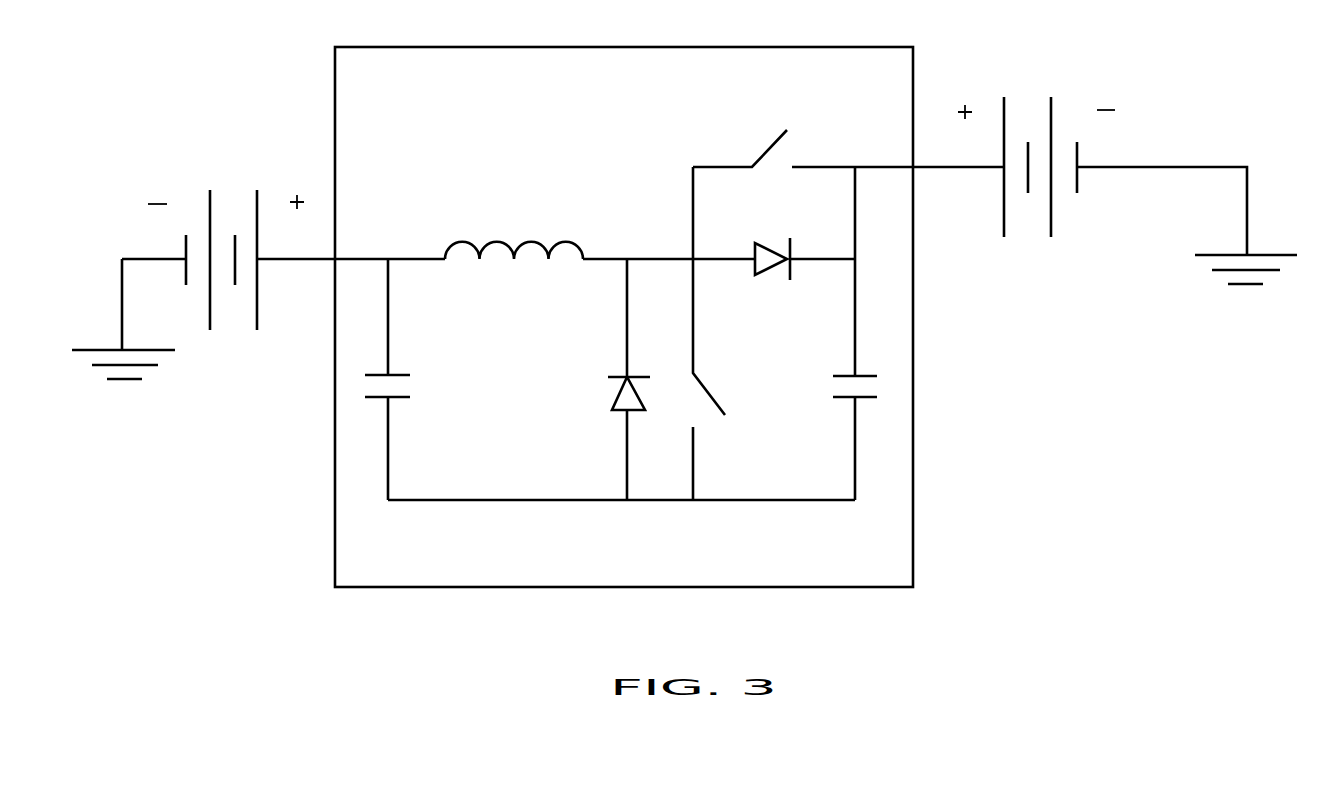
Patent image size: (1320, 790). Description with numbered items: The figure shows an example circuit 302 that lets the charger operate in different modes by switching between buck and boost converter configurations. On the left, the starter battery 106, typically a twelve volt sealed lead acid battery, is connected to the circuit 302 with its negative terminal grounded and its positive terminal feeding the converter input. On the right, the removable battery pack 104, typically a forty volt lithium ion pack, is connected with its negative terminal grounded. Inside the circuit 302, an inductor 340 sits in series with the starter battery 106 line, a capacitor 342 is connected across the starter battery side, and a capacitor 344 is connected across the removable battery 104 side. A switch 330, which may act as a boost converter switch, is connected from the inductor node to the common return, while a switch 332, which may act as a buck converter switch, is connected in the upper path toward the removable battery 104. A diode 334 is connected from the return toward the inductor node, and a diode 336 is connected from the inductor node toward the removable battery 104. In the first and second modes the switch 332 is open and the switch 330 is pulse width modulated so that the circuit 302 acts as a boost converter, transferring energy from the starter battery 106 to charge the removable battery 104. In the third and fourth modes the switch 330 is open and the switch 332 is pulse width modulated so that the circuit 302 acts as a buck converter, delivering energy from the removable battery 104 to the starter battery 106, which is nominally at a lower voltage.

The removable battery pack 104 is at (1115, 100).
The starter battery 106 is at (145, 240).
The circuit 302 is at (438, 94).
The switch 330 is at (703, 385).
The switch 332 is at (765, 145).
The diode 334 is at (607, 398).
The diode 336 is at (775, 275).
The inductor 340 is at (513, 237).
The capacitor 342 is at (368, 381).
The capacitor 344 is at (870, 372).